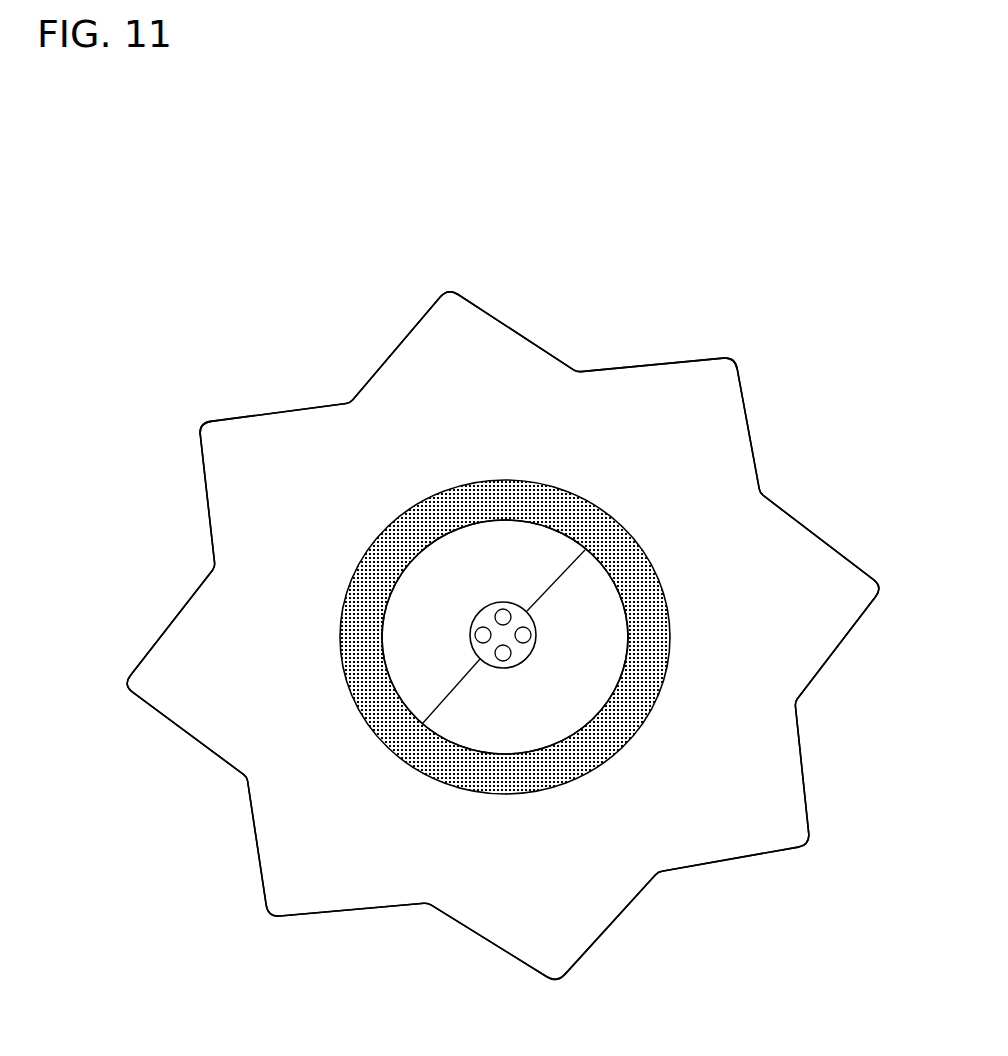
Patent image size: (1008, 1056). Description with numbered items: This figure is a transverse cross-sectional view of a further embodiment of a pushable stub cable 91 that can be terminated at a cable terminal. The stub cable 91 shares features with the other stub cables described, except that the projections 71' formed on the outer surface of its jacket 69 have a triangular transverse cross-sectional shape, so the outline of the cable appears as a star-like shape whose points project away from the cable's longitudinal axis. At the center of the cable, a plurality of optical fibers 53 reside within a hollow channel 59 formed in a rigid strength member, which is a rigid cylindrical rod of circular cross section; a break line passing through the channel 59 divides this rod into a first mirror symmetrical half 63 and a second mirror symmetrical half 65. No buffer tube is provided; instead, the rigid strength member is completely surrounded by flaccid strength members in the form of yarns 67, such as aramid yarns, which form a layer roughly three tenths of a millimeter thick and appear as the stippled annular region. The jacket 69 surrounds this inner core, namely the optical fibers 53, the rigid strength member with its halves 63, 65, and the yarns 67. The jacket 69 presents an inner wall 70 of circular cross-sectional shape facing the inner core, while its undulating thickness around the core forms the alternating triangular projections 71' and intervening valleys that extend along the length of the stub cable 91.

The stub cable 91 is at (108, 490).
The jacket 69 is at (662, 464).
The projections 71' is at (483, 321).
The inner wall 70 is at (402, 515).
The yarns 67 is at (650, 595).
The first mirror symmetrical half 63 is at (473, 587).
The second mirror symmetrical half 65 is at (593, 687).
The hollow channel 59 is at (527, 658).
The optical fibers 53 is at (503, 617).